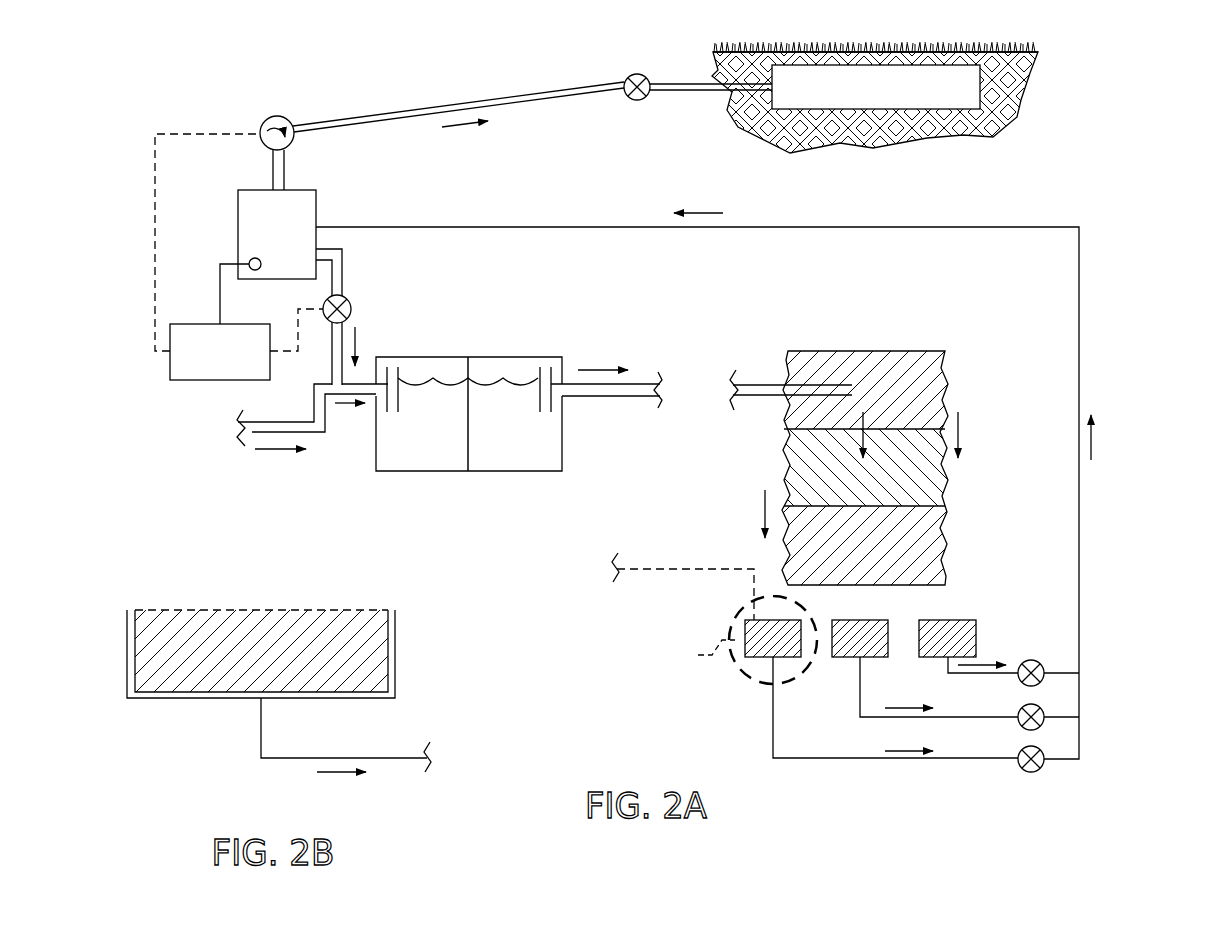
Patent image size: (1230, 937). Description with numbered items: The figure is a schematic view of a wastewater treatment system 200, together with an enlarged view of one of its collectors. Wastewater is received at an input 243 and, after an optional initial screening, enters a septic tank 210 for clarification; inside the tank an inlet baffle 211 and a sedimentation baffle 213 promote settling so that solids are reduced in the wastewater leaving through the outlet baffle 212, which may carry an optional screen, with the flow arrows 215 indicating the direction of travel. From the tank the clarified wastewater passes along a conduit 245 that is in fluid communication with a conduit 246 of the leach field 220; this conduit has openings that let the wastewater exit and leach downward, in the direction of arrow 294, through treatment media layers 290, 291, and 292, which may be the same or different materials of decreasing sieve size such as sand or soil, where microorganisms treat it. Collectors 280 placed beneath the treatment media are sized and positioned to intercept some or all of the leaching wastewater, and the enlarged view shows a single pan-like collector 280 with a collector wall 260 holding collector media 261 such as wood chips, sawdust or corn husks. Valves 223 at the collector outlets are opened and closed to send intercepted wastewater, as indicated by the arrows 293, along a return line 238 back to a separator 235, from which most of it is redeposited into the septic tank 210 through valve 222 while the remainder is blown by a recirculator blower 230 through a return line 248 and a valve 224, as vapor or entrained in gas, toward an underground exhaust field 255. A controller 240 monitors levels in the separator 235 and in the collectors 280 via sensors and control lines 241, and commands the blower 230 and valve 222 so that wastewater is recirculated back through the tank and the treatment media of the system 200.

In FIG. 2A, the treatment system 200 is at (1079, 189).
In FIG. 2A, the septic tank 210 is at (452, 439).
In FIG. 2A, the inlet baffle 211 is at (397, 414).
In FIG. 2A, the outlet baffle 212 is at (551, 414).
In FIG. 2A, the sedimentation baffle 213 is at (471, 416).
In FIG. 2A, the wastewater flow arrows 215 is at (358, 332).
In FIG. 2A, the leach field 220 is at (915, 427).
In FIG. 2A, the valve 222 is at (352, 305).
In FIG. 2A, the valves 223 is at (1032, 660).
In FIG. 2A, the valve 224 is at (640, 100).
In FIG. 2A, the recirculator blower 230 is at (275, 117).
In FIG. 2A, the separator 235 is at (316, 206).
In FIG. 2A, the return line 238 is at (862, 227).
In FIG. 2A, the controller 240 is at (212, 380).
In FIG. 2A, the control lines 241 is at (155, 197).
In FIG. 2A, the input 243 is at (246, 440).
In FIG. 2A, the conduit 245 is at (654, 376).
In FIG. 2A, the conduit 246 is at (760, 378).
In FIG. 2A, the return line 248 is at (458, 106).
In FIG. 2A, the exhaust field 255 is at (898, 100).
In FIG. 2B, the collector wall 260 is at (127, 650).
In FIG. 2B, the collector media 261 is at (252, 620).
In FIG. 2A, the collector 280 is at (985, 611).
In FIG. 2B, the collector 280 is at (409, 641).
In FIG. 2A, the treatment media layer 290 is at (940, 388).
In FIG. 2A, the treatment media layer 291 is at (940, 480).
In FIG. 2A, the treatment media layer 292 is at (940, 530).
In FIG. 2A, the wastewater flow arrows 293 is at (718, 213).
In FIG. 2B, the wastewater flow arrows 293 is at (340, 776).
In FIG. 2A, the wastewater flow arrow 294 is at (761, 505).